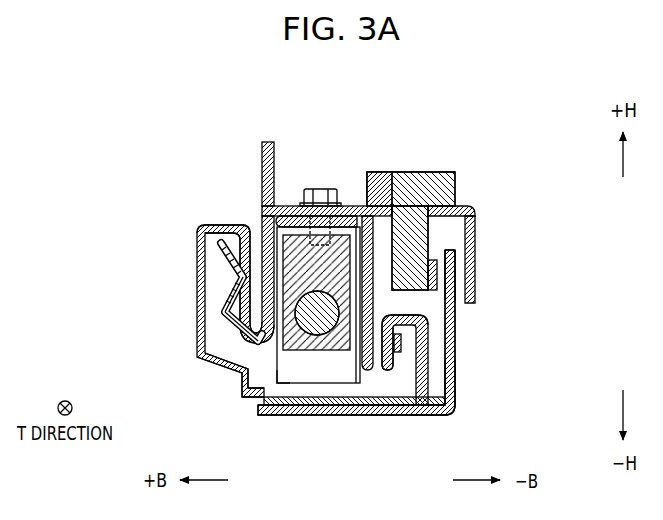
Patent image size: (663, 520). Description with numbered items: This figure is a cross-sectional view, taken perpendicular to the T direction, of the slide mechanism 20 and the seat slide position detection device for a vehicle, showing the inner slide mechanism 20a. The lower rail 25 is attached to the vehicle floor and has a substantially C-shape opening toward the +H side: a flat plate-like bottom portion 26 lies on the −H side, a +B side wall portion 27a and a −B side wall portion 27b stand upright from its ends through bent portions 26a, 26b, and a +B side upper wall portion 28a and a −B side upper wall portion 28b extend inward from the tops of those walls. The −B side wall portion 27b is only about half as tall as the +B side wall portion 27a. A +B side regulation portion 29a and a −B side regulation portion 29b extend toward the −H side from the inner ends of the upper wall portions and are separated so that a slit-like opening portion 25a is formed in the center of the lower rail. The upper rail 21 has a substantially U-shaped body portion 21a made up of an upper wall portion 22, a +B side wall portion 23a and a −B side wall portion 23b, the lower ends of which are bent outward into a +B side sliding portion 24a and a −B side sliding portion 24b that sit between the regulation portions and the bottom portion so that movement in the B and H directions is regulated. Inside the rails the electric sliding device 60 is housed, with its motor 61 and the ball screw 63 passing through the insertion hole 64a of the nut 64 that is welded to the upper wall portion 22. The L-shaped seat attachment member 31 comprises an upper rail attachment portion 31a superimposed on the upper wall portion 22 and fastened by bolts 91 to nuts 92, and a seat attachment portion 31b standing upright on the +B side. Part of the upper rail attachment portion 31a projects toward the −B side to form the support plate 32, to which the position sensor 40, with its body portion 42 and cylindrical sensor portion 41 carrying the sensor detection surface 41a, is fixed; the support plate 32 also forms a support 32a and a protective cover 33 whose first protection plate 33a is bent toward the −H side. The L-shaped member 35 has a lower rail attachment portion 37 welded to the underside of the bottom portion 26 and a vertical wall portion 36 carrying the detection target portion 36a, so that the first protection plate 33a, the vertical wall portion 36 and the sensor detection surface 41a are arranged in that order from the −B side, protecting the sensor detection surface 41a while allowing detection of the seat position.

The slide mechanism 20 is at (103, 168).
The inner slide mechanism 20a is at (263, 239).
The upper rail 21 is at (243, 212).
The body portion 21a is at (248, 243).
The upper wall portion 22 is at (282, 218).
The +B side wall portion 23a is at (235, 229).
The −B side wall portion 23b is at (456, 249).
The +B side sliding portion 24a is at (198, 360).
The −B side sliding portion 24b is at (457, 369).
The lower rail 25 is at (186, 209).
The opening portion 25a is at (238, 270).
The bottom portion 26 is at (265, 418).
The bent portion 26a is at (238, 392).
The bent portion 26b is at (414, 416).
The +B side wall portion 27a is at (222, 322).
The −B side wall portion 27b is at (399, 355).
The +B side upper wall portion 28a is at (240, 222).
The −B side upper wall portion 28b is at (450, 301).
The +B side regulation portion 29a is at (243, 300).
The −B side regulation portion 29b is at (426, 336).
The seat attachment member 31 is at (268, 134).
The upper rail attachment portion 31a is at (356, 214).
The seat attachment portion 31b is at (264, 180).
The support plate 32 is at (454, 173).
The support post 32a is at (410, 207).
The cover portion 33 is at (477, 222).
The first protection plate 33a is at (527, 233).
The L-shaped member 35 is at (464, 405).
The vertical wall portion 36 is at (432, 318).
The detection target portion 36a is at (451, 282).
The lower rail attachment portion 37 is at (382, 415).
The position sensor 40 is at (443, 165).
The sensor portion 41 is at (425, 230).
The sensor detection surface 41a is at (437, 272).
The body portion 42 is at (386, 180).
The electric sliding device 60 is at (358, 406).
The motor 61 is at (293, 352).
The ball screw 63 is at (318, 326).
The nut 64 is at (352, 390).
The insertion hole 64a is at (276, 385).
The bolt 91 is at (328, 189).
The nut 92 is at (311, 189).